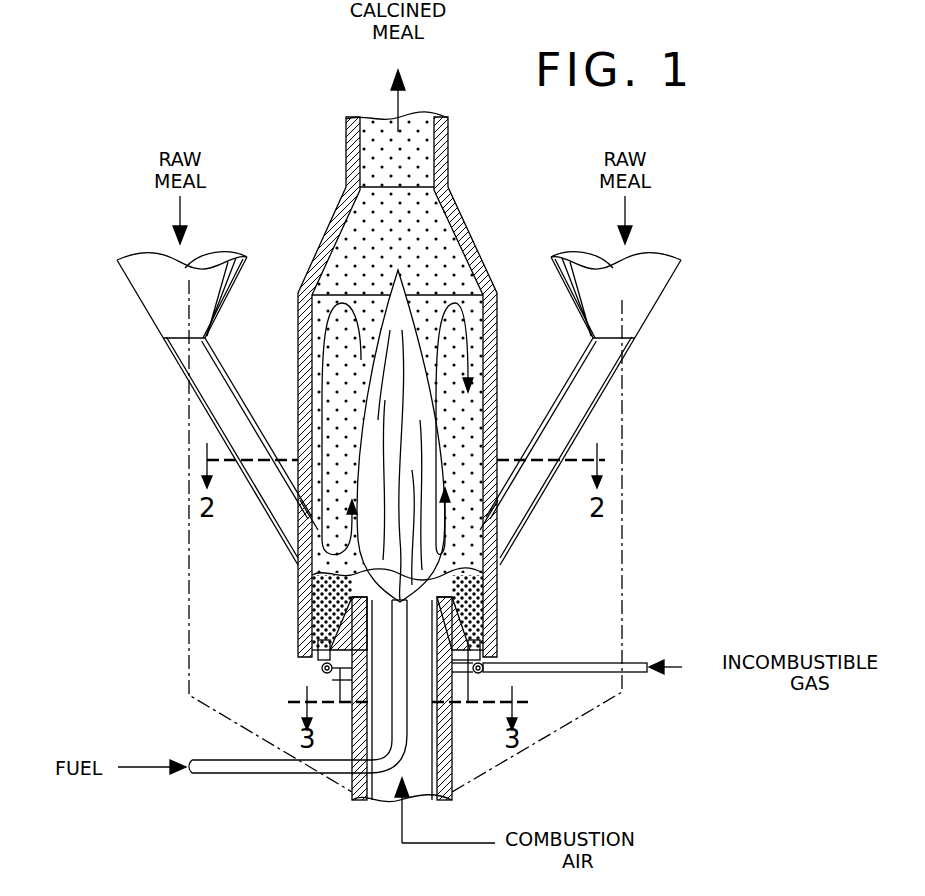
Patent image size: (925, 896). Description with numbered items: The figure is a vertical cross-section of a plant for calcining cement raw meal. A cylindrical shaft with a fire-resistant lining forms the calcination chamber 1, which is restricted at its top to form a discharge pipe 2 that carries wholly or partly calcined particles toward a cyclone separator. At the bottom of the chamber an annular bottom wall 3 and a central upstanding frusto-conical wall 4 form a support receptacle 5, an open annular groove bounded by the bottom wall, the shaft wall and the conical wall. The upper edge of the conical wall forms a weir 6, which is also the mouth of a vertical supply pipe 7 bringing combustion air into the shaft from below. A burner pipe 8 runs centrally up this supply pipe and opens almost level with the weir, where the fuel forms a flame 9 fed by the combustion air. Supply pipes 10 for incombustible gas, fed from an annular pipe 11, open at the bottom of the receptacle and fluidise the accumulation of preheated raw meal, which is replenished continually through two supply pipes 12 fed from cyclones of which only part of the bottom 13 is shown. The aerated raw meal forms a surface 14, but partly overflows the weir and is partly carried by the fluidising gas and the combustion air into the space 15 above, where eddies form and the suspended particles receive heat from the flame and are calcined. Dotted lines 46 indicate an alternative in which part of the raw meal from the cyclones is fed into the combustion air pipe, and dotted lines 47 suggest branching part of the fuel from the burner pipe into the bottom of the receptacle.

The calcination chamber 1 is at (506, 353).
The discharge pipe 2 is at (368, 147).
The annular bottom wall 3 is at (302, 650).
The frusto-conical wall 4 is at (350, 612).
The support receptacle 5 is at (492, 607).
The weir 6 is at (379, 653).
The supply pipe for combustion air 7 is at (352, 800).
The burner pipe 8 is at (405, 670).
The flame 9 is at (427, 420).
The supply pipes for incombustible gas 10 is at (322, 666).
The pipe 11 is at (590, 666).
The supply pipes 12 is at (232, 394).
The cyclone bottom 13 is at (162, 315).
The surface 14 is at (365, 578).
The space 15 is at (481, 427).
The dotted lines 46 is at (189, 573).
The dotted lines 47 is at (385, 699).